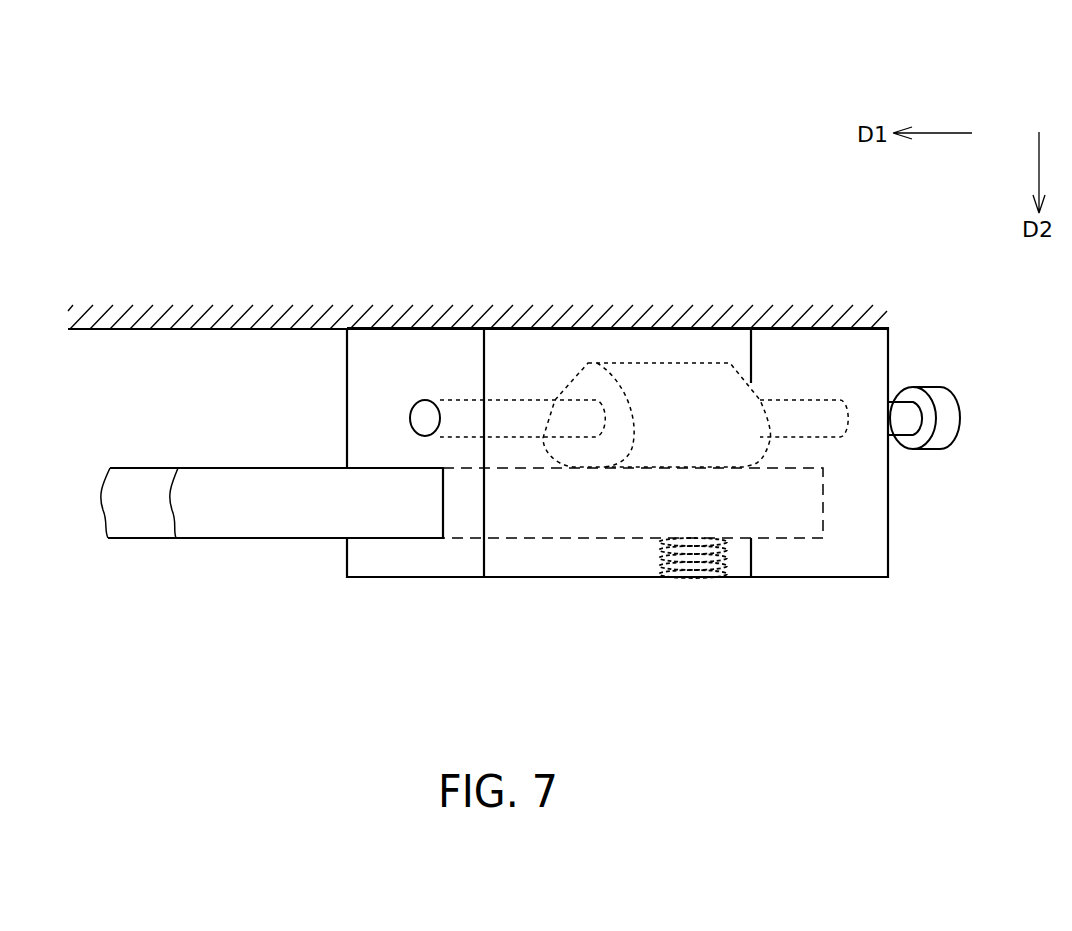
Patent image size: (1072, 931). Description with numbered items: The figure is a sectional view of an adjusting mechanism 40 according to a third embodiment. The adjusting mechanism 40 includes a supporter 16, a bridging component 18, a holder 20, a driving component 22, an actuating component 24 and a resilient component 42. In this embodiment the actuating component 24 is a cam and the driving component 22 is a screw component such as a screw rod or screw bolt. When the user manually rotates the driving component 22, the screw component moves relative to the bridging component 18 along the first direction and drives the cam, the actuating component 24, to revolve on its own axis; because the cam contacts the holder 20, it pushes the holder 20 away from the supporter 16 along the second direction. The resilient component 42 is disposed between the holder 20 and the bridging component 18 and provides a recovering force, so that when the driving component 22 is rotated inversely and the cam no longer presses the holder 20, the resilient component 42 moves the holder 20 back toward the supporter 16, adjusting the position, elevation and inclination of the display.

The supporter 16 is at (102, 332).
The bridging component 18 is at (550, 578).
The holder 20 is at (235, 517).
The driving component 22 is at (942, 445).
The actuating component 24 is at (667, 380).
The adjusting mechanism 40 is at (200, 112).
The resilient component 42 is at (723, 563).